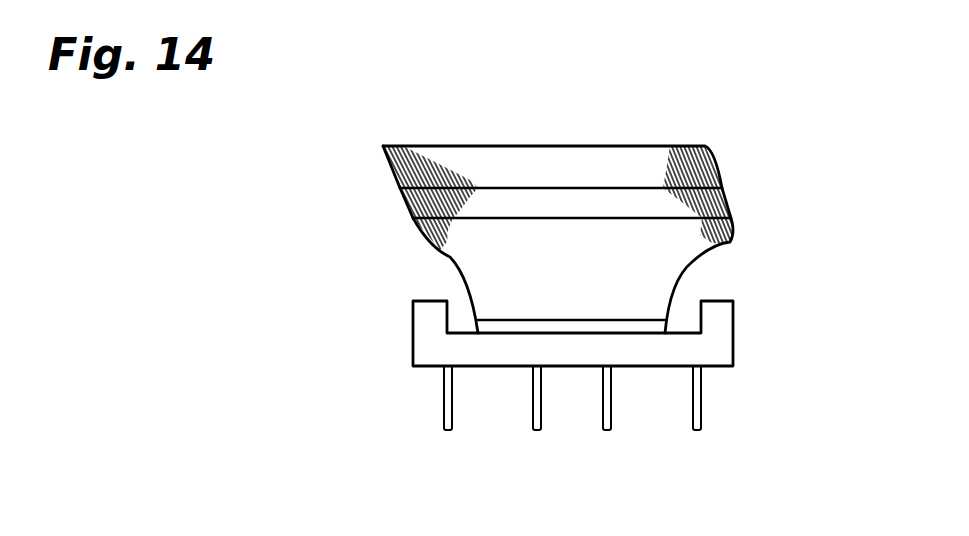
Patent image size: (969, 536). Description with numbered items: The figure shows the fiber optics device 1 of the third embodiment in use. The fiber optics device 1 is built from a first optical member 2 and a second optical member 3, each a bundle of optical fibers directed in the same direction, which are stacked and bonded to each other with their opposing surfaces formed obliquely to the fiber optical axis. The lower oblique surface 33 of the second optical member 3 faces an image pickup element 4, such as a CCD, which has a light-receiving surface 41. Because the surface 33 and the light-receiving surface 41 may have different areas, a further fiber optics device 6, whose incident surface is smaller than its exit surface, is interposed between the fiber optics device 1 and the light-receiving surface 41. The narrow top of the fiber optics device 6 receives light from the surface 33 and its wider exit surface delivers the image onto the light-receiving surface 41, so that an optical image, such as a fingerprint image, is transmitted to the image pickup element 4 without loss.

The fiber optics device 1 is at (372, 160).
The first optical member 2 is at (730, 208).
The second optical member 3 is at (716, 171).
The image pickup element 4 is at (735, 342).
The fiber optics device 6 is at (703, 245).
The surface 33 is at (522, 219).
The light-receiving surface 41 is at (633, 326).